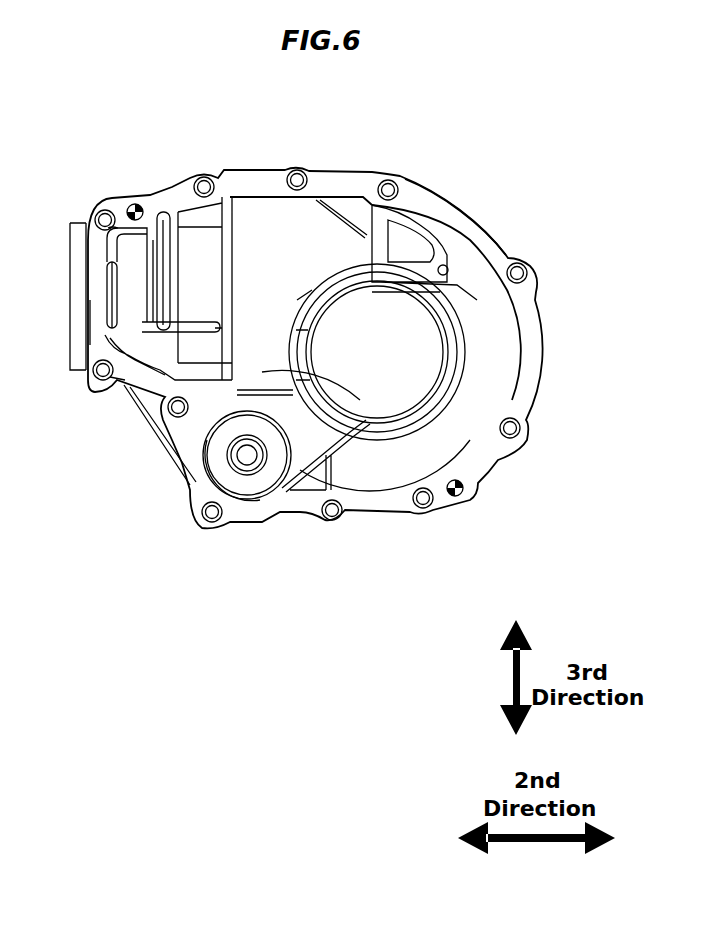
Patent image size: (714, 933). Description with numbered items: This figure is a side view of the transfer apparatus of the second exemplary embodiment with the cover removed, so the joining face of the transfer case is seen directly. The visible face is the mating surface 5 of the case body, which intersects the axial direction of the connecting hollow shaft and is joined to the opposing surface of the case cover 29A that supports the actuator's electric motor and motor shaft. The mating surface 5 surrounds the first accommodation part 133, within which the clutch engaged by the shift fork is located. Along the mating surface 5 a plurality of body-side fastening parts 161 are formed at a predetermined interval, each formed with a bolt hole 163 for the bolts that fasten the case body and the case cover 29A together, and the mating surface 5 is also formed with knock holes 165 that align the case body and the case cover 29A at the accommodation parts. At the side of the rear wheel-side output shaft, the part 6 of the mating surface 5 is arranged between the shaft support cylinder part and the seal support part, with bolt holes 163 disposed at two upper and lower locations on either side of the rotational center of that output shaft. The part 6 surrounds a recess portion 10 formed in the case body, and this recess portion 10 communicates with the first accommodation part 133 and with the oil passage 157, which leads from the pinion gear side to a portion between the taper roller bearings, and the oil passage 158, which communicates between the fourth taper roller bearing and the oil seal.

The mating surface 5 is at (306, 348).
The part of the mating surface 6 is at (120, 380).
The recess portion 10 is at (127, 337).
The case cover 29A is at (482, 221).
The first accommodation part 133 is at (490, 375).
The oil passage 157 is at (162, 270).
The oil passage 158 is at (88, 215).
The body-side fastening part 161 is at (93, 387).
The bolt hole 163 is at (103, 378).
The knock hole 165 is at (475, 484).